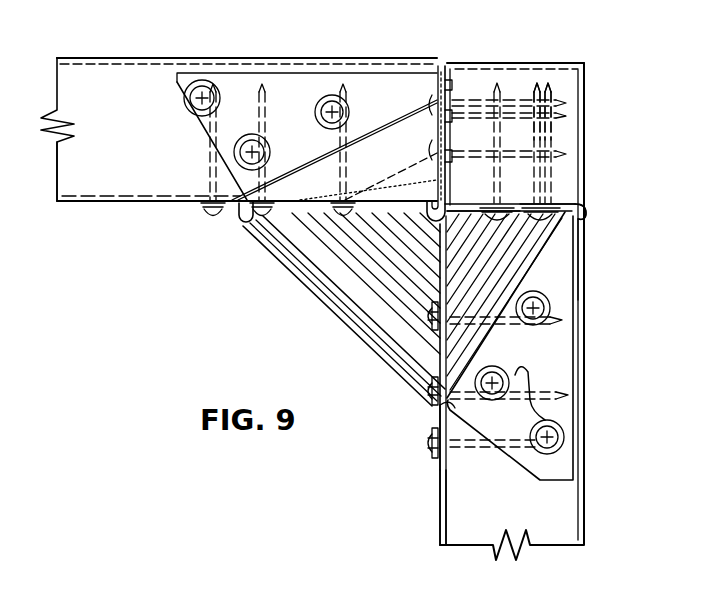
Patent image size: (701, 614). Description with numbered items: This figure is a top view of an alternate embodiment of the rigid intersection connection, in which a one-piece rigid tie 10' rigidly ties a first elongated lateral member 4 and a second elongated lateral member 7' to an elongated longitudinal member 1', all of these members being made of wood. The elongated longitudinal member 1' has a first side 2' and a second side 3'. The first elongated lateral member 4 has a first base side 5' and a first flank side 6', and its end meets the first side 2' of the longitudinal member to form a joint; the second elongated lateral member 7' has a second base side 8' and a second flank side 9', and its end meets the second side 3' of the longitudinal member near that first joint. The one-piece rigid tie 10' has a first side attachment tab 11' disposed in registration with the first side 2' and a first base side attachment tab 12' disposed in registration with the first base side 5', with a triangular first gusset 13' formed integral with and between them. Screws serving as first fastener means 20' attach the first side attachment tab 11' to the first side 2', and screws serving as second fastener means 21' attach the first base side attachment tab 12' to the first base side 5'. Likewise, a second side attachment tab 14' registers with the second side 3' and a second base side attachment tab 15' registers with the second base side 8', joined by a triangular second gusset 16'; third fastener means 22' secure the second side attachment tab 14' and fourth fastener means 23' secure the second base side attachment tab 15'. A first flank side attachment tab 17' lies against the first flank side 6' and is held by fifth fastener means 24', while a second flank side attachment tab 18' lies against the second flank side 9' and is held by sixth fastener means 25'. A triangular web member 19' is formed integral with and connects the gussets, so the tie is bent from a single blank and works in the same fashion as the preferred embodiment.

The first elongated lateral member 4 is at (100, 62).
The first base side 5' is at (239, 129).
The first flank side 6' is at (76, 199).
The first flank side attachment tab 17' is at (180, 228).
The first base side attachment tab 12' is at (307, 110).
The first gusset 13' is at (334, 113).
The fifth fastener means 24' is at (400, 233).
The second fastener means 21' is at (266, 125).
The first side 2' is at (448, 111).
The first side attachment tab 11' is at (421, 121).
The elongated longitudinal member 1' is at (515, 110).
The second side 3' is at (571, 195).
The second side attachment tab 14' is at (483, 186).
The first fastener means 20' is at (555, 89).
The third fastener means 22' is at (544, 138).
The second base side 8' is at (512, 311).
The second flank side 9' is at (412, 507).
The second elongated lateral member 7' is at (609, 249).
The second gusset 16' is at (538, 305).
The second base side attachment tab 15' is at (542, 348).
The fourth fastener means 23' is at (519, 372).
The sixth fastener means 25' is at (395, 380).
The second flank side attachment tab 18' is at (412, 453).
The one-piece rigid tie 10' is at (307, 303).
The triangular web member 19' is at (366, 307).